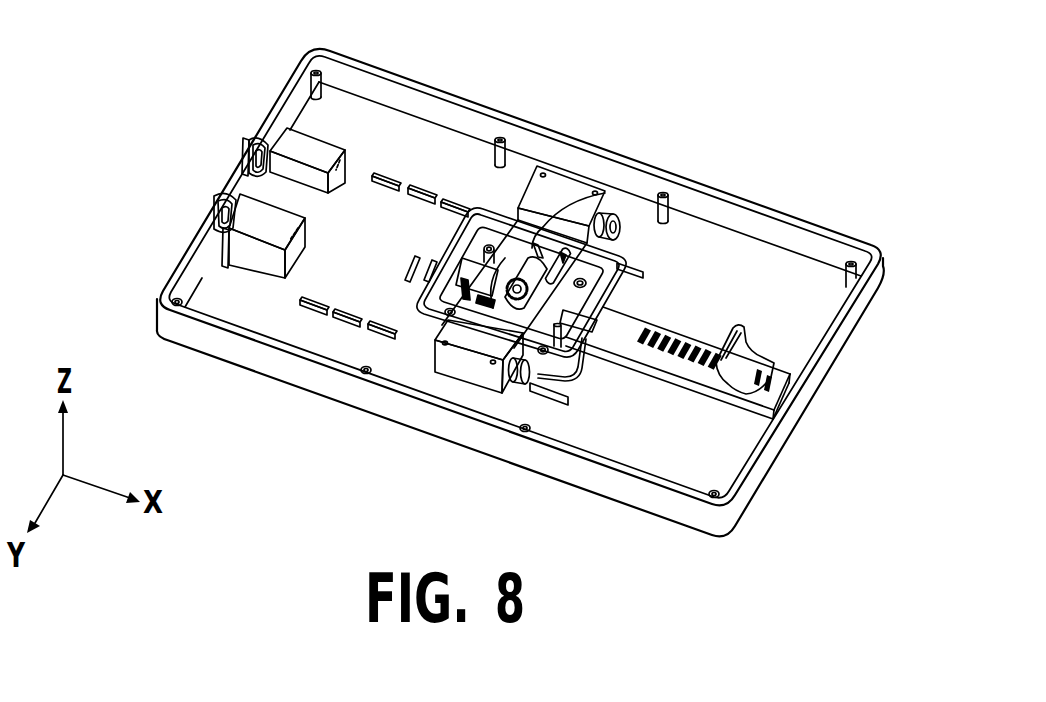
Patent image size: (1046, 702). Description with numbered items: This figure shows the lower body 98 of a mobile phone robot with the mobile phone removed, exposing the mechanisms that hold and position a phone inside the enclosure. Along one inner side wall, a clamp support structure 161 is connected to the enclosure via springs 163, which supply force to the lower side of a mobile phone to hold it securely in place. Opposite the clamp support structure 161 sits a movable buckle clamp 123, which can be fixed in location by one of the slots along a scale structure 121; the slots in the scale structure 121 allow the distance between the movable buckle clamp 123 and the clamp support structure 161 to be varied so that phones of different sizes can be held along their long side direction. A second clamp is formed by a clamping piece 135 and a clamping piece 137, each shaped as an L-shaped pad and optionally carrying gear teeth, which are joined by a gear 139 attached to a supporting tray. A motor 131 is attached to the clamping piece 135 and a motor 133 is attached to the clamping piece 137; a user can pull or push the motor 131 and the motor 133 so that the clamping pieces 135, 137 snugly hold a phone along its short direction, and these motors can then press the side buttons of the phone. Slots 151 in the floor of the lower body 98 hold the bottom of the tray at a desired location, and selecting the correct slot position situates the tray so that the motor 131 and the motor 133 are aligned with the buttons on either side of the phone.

The lower body 98 is at (232, 350).
The scale structure 121 is at (793, 348).
The movable buckle clamp 123 is at (714, 380).
The motor 131 is at (423, 337).
The motor 133 is at (566, 188).
The clamping piece 135 is at (508, 322).
The clamping piece 137 is at (622, 215).
The gear 139 is at (590, 262).
The slots 151 is at (393, 172).
The clamp support structure 161 is at (268, 195).
The springs 163 is at (252, 128).